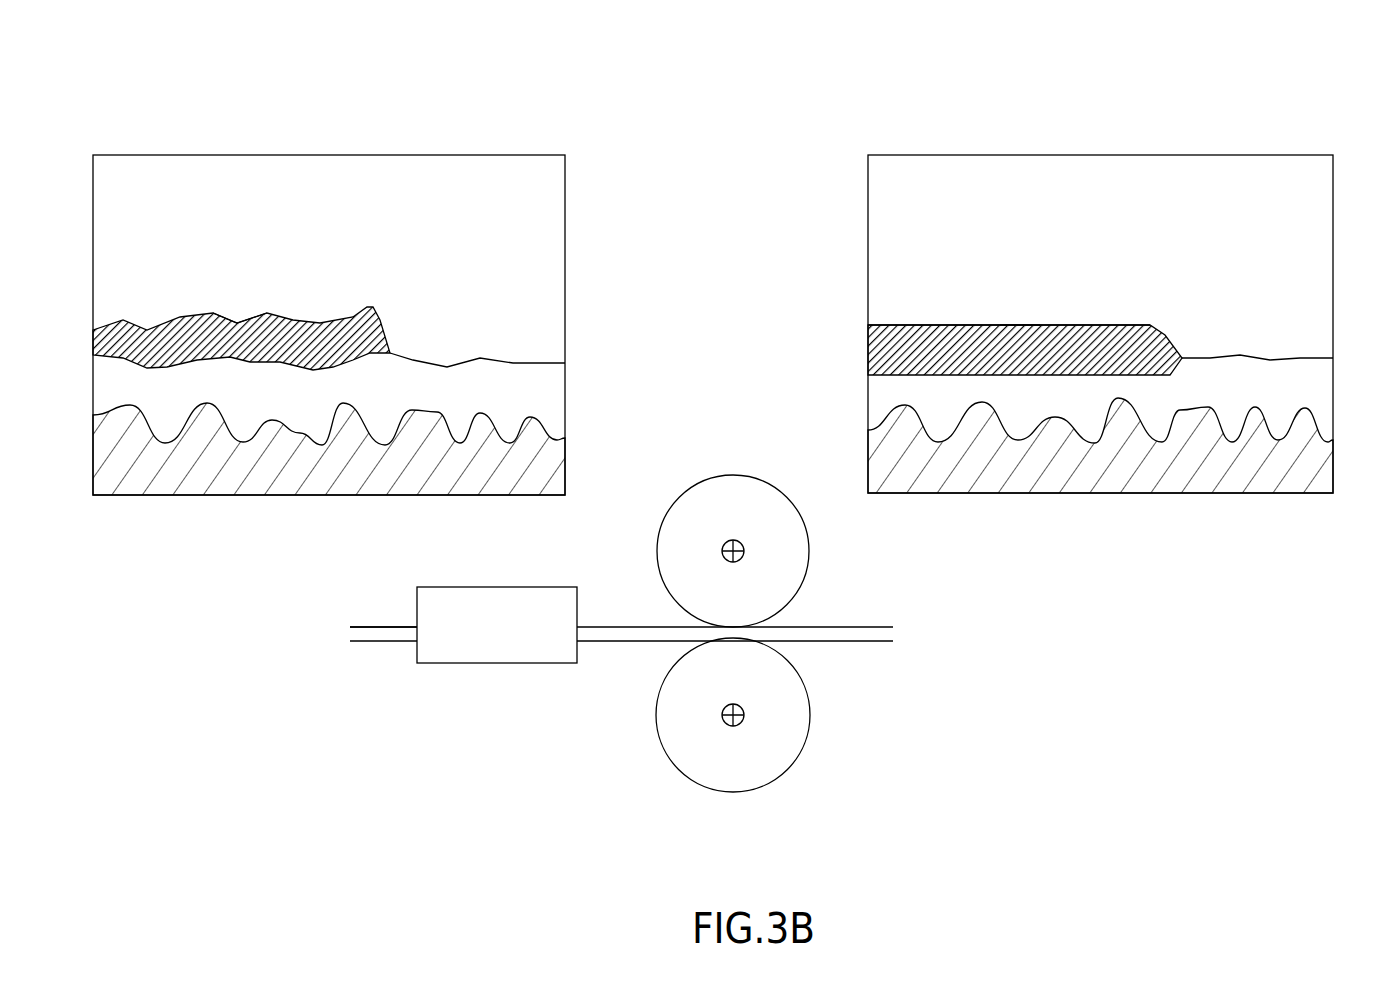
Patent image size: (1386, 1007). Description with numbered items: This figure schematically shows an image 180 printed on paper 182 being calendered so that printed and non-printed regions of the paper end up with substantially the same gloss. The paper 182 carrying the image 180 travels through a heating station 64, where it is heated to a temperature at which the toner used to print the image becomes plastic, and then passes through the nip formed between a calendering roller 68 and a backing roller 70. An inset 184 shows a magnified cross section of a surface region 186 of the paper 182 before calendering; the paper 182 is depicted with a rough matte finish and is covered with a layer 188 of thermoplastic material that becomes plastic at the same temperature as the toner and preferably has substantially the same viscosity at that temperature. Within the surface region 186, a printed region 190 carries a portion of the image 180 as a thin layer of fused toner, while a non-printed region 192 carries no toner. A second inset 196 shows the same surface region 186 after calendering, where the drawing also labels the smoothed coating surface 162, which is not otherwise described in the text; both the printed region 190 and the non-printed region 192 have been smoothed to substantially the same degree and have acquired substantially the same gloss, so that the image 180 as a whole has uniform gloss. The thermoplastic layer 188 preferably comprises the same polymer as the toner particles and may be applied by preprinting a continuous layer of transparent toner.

The inset 184 is at (500, 102).
The inset 196 is at (1270, 97).
The paper 182 is at (375, 475).
The surface region 186 is at (360, 243).
The calendered coating surface 162 is at (950, 327).
The printed region 190 is at (243, 298).
The non-printed region 192 is at (483, 307).
The thermoplastic layer 188 is at (313, 409).
The heating station 64 is at (497, 663).
The image 180 is at (389, 626).
The calendering roller 68 is at (733, 474).
The backing roller 70 is at (800, 755).